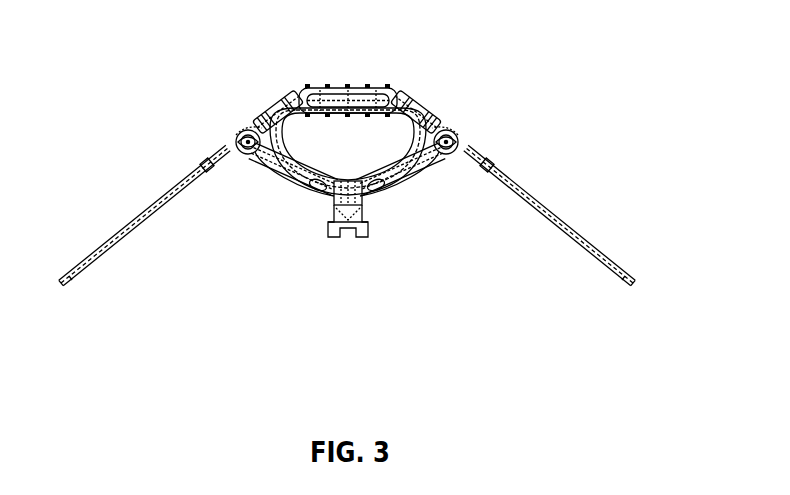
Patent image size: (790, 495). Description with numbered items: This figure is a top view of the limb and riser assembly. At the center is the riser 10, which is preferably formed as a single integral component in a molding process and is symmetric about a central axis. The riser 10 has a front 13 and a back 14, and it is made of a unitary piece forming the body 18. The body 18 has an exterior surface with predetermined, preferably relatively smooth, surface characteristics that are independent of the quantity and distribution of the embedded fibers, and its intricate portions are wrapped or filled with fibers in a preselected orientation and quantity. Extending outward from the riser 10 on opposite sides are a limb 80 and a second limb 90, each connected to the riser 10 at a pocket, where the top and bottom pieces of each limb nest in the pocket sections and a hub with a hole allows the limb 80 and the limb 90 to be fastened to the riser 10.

The riser 10 is at (373, 86).
The front 13 is at (337, 90).
The back 14 is at (335, 235).
The body 18 is at (290, 178).
The limb 80 is at (593, 250).
The second limb 90 is at (115, 245).